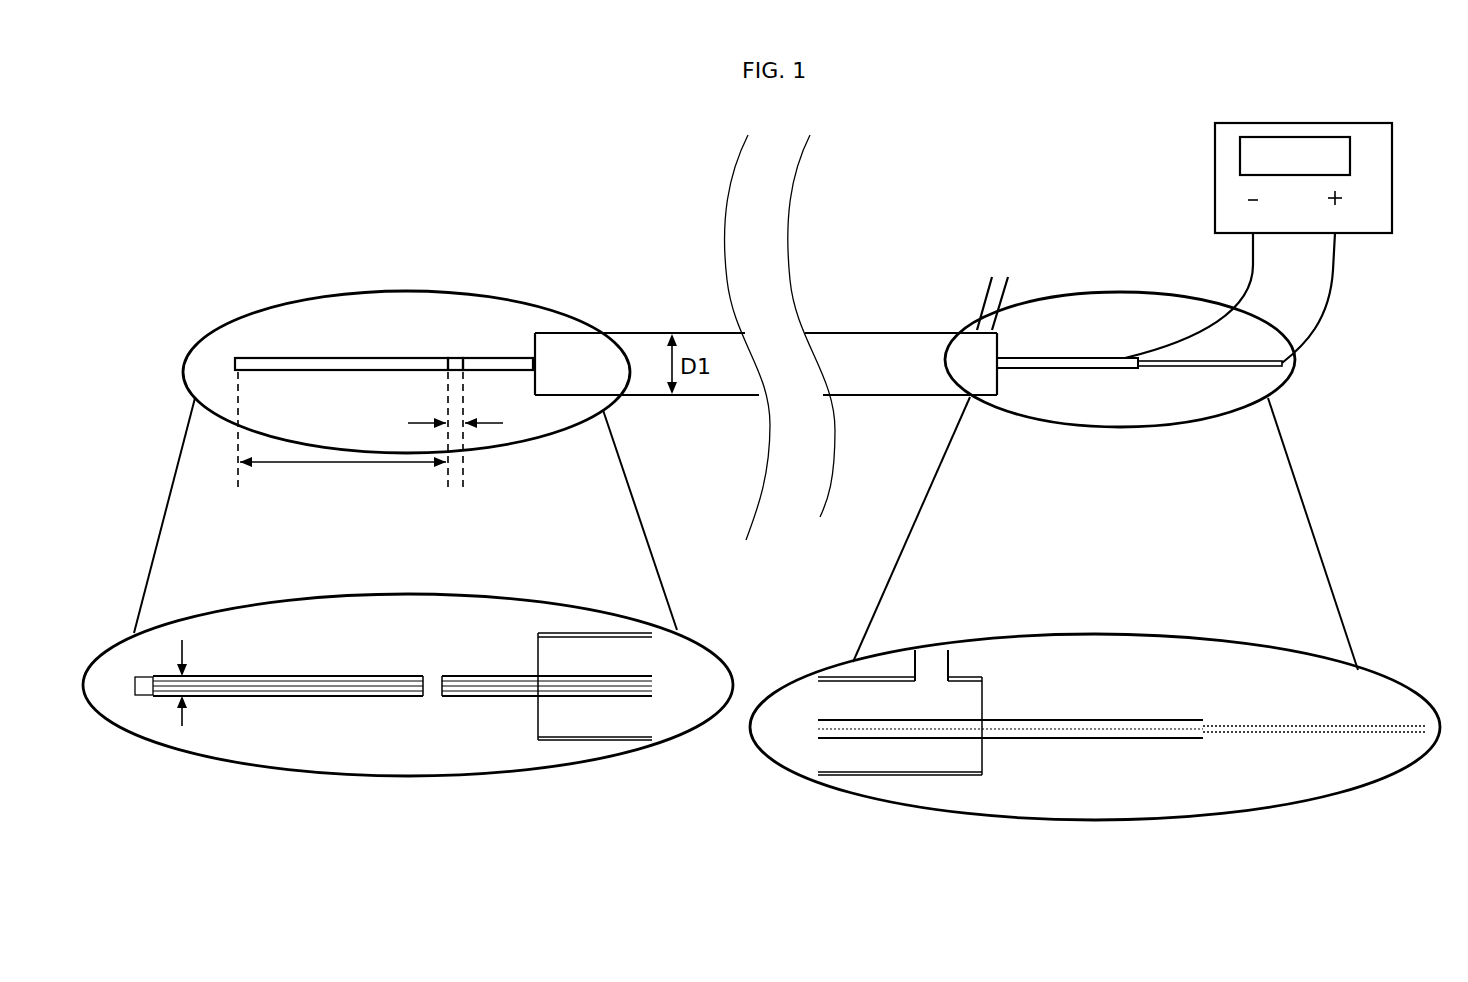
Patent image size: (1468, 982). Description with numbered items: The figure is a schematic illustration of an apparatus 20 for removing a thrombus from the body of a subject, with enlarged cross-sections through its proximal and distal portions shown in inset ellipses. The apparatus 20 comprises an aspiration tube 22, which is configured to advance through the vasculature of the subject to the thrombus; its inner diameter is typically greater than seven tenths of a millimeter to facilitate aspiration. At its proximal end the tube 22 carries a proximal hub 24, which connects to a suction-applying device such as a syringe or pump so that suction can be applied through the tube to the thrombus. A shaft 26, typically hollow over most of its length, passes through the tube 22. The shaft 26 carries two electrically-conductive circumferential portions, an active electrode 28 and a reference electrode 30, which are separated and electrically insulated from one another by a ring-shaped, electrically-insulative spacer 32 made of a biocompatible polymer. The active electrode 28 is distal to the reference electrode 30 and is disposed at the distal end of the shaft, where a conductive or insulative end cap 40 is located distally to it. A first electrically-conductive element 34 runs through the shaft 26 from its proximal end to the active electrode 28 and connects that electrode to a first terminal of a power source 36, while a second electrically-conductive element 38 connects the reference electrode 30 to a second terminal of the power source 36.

The apparatus 20 is at (898, 250).
The aspiration tube 22 is at (922, 396).
The proximal hub 24 is at (983, 306).
The shaft 26 is at (1044, 356).
The active electrode 28 is at (362, 357).
The reference electrode 30 is at (500, 357).
The spacer 32 is at (456, 356).
The first electrically-conductive element 34 is at (1200, 368).
The power source 36 is at (1394, 174).
The second electrically-conductive element 38 is at (1248, 271).
The end cap 40 is at (140, 697).